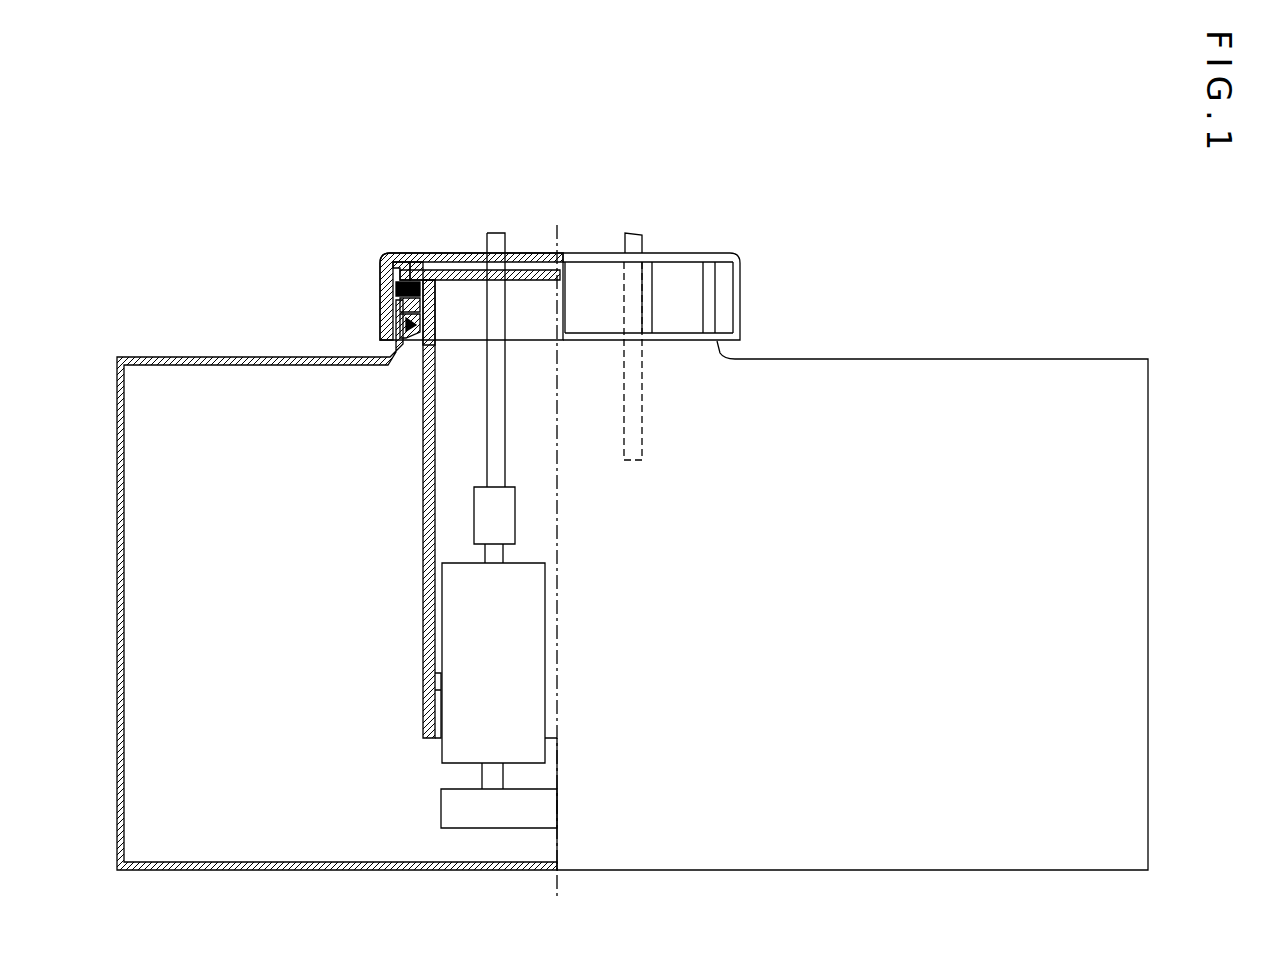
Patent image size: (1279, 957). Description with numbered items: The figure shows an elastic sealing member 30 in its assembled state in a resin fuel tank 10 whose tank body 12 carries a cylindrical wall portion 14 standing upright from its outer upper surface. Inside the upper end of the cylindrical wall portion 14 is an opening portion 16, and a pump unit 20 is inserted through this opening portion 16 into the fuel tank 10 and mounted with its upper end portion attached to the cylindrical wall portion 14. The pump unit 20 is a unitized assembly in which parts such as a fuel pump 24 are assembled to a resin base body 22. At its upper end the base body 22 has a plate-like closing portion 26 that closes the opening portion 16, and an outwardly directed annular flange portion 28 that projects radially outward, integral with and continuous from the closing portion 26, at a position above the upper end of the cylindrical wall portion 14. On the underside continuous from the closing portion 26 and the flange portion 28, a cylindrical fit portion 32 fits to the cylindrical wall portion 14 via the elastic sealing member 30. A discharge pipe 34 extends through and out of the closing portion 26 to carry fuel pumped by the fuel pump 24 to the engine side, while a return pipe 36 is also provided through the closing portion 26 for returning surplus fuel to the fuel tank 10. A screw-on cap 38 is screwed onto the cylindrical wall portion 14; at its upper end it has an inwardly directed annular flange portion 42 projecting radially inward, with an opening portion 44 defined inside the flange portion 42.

The resin fuel tank 10 is at (987, 323).
The tank body 12 is at (176, 357).
The cylindrical wall portion 14 is at (392, 304).
The opening portion 16 is at (398, 284).
The pump unit 20 is at (410, 530).
The resin base body 22 is at (422, 477).
The fuel pump 24 is at (455, 623).
The plate-like closing portion 26 is at (525, 262).
The outwardly directed annular flange portion 28 is at (414, 262).
The elastic sealing member 30 is at (424, 302).
The fit portion 32 is at (394, 327).
The discharge pipe 34 is at (490, 420).
The return pipe 36 is at (632, 405).
The screw-on cap 38 is at (680, 255).
The inwardly directed annular flange portion 42 is at (402, 262).
The opening portion 44 is at (441, 270).